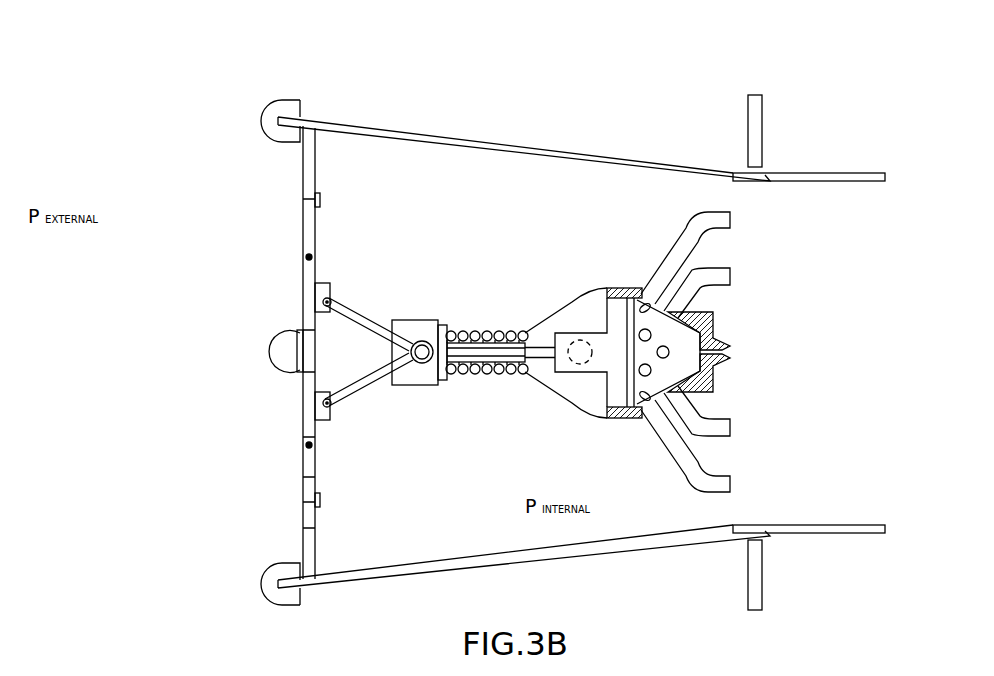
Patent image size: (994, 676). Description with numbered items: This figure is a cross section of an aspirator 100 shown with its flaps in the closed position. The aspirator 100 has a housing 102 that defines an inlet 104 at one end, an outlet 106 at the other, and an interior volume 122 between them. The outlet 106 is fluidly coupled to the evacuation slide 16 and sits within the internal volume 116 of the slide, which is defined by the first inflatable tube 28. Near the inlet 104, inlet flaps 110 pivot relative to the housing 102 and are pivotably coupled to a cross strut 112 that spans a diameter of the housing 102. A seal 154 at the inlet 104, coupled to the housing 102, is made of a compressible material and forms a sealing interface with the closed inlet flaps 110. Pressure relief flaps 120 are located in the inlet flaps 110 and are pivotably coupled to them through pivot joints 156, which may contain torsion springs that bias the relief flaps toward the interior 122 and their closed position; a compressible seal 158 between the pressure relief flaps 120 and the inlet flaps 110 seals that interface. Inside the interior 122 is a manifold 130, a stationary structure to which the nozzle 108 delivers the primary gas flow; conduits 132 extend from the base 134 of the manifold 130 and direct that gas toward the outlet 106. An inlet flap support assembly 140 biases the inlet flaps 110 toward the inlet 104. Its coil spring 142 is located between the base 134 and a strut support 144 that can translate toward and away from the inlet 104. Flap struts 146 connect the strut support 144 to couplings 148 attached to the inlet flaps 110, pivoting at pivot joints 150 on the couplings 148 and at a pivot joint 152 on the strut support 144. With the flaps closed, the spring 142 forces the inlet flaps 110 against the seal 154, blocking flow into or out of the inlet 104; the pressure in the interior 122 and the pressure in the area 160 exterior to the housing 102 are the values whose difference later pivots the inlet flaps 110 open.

The aspirator 100 is at (122, 100).
The housing 102 is at (512, 133).
The inlet 104 is at (263, 159).
The outlet 106 is at (884, 216).
The nozzle 108 is at (577, 338).
The inlet flaps 110 is at (303, 296).
The cross strut 112 is at (274, 352).
The internal volume 116 is at (889, 139).
The pressure relief flaps 120 is at (303, 217).
The interior volume 122 is at (502, 491).
The manifold 130 is at (599, 270).
The conduits 132 is at (677, 248).
The base 134 is at (572, 380).
The inlet flap support assembly 140 is at (450, 263).
The spring 142 is at (487, 330).
The strut support 144 is at (428, 378).
The flap struts 146 is at (398, 337).
The coupling 148 is at (331, 289).
The pivot joints 150 is at (332, 302).
The pivot joint 152 is at (408, 352).
The seal 154 is at (270, 121).
The pivot joints 156 is at (306, 257).
The seal 158 is at (320, 200).
The area exterior to housing 160 is at (139, 425).
The evacuation slide 16 is at (762, 93).
The first inflatable tube 28 is at (760, 128).